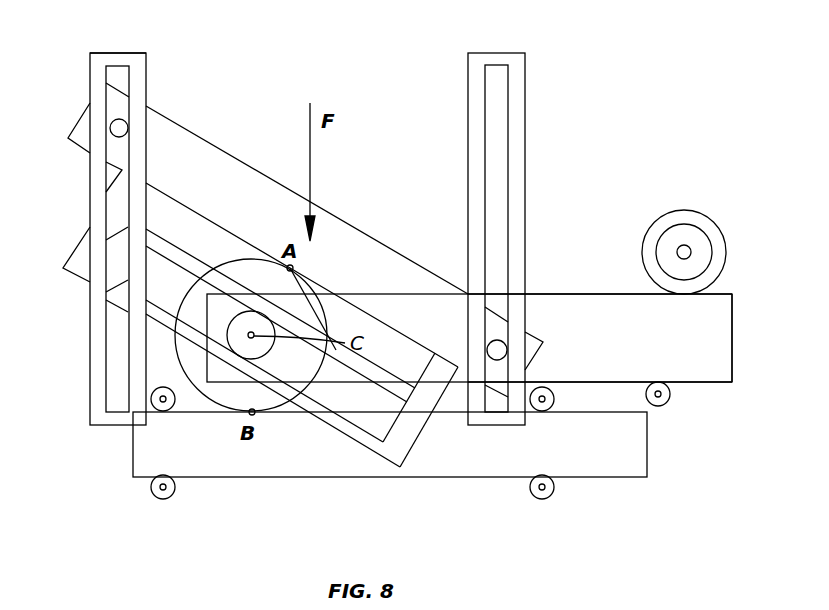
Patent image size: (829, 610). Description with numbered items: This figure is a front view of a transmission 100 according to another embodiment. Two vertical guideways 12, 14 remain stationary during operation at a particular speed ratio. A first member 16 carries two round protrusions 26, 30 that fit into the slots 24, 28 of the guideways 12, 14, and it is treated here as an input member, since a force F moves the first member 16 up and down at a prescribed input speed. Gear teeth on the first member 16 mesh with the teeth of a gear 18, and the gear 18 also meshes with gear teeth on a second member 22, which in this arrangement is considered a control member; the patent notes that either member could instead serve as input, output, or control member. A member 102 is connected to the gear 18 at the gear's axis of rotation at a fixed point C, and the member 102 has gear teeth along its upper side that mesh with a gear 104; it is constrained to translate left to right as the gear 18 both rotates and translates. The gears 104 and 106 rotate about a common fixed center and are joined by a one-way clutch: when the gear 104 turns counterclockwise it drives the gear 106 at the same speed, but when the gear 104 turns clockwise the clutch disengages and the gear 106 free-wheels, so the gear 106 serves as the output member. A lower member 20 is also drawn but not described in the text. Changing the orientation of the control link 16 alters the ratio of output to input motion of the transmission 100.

The guideway 12 is at (517, 92).
The guideway 14 is at (137, 92).
The first member 16 is at (350, 220).
The gear 18 is at (312, 317).
The lower beam 20 is at (305, 398).
The second member 22 is at (633, 447).
The slot 24 is at (498, 167).
The round protrusion 26 is at (529, 345).
The slot 28 is at (122, 83).
The round protrusion 30 is at (113, 125).
The transmission 100 is at (612, 52).
The member 102 is at (708, 333).
The gear 104 is at (690, 212).
The gear 106 is at (665, 254).